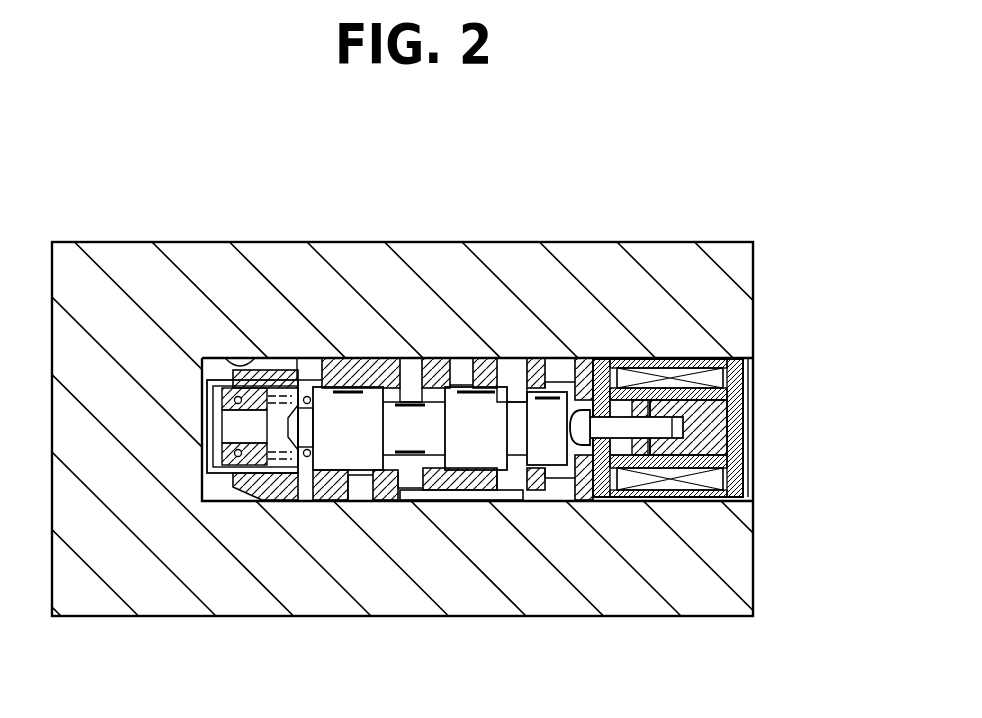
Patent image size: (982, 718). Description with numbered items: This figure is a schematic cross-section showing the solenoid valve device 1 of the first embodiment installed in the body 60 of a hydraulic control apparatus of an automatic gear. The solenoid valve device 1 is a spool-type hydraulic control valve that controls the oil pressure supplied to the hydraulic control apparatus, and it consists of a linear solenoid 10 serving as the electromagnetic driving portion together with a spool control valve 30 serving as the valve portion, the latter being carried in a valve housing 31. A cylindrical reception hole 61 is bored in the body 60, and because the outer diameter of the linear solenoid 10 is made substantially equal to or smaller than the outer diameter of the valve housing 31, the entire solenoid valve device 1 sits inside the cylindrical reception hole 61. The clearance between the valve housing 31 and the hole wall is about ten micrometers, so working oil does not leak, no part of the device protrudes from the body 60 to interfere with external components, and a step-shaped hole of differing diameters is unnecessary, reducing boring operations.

The solenoid valve device 1 is at (757, 368).
The linear solenoid 10 is at (666, 503).
The spool control valve 30 is at (477, 491).
The valve housing 31 is at (289, 498).
The body 60 is at (687, 258).
The cylindrical reception hole 61 is at (238, 365).